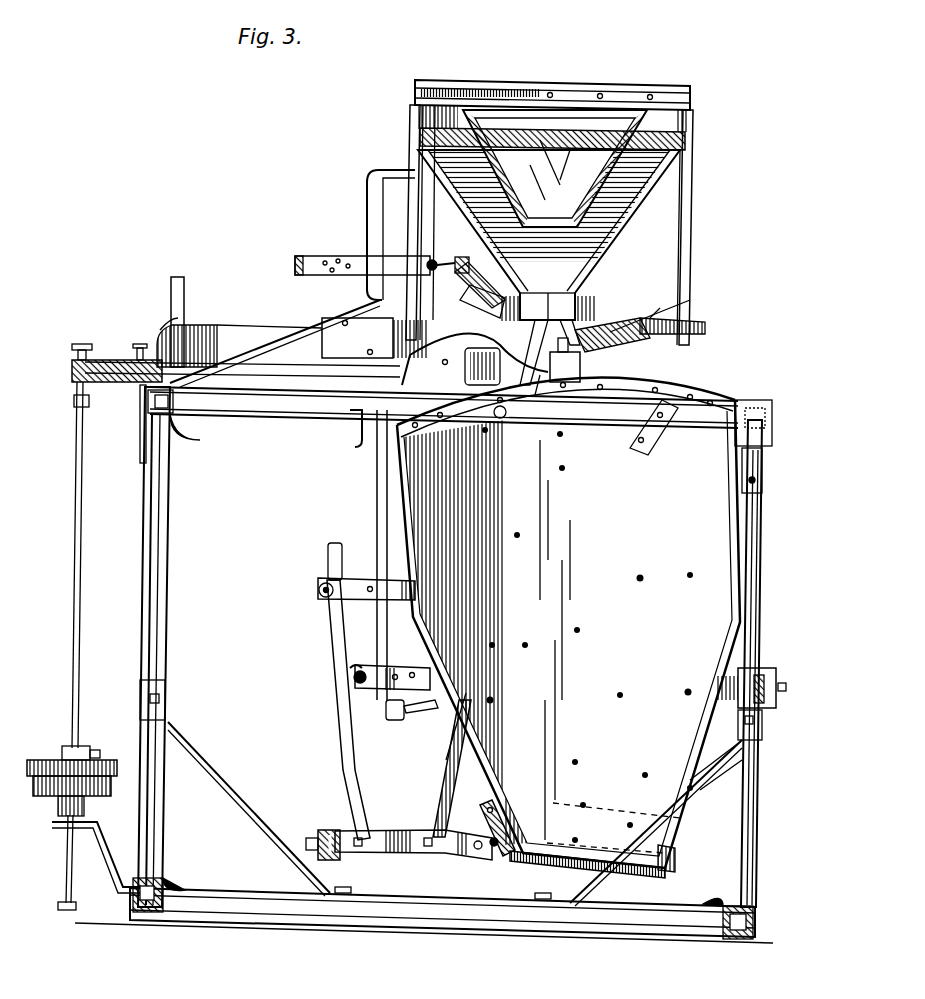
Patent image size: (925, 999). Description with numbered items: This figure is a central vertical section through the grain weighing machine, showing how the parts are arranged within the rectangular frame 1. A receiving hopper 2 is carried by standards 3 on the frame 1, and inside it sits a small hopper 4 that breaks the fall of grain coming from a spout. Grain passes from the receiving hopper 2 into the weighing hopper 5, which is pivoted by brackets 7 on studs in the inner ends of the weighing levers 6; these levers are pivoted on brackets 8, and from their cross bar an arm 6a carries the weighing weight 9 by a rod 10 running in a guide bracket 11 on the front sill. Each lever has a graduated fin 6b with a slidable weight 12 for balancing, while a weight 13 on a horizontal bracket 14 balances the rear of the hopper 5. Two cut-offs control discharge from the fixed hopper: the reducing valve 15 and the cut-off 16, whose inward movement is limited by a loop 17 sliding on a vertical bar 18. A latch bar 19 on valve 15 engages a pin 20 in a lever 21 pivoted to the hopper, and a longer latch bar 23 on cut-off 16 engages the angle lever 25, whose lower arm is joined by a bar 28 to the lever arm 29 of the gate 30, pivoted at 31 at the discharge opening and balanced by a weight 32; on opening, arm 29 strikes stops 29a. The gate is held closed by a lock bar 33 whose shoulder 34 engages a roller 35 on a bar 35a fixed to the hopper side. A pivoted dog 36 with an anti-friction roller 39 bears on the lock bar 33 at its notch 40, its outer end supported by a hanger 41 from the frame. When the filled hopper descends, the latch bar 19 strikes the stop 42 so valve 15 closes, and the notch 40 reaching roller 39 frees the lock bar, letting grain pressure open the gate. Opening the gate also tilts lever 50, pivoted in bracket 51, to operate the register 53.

The rectangular frame 1 is at (150, 525).
The receiving hopper 2 is at (548, 86).
The standards 3 is at (415, 145).
The small hopper 4 is at (555, 168).
The weighing hopper 5 is at (590, 485).
The weighing levers 6 is at (300, 370).
The arm 6a is at (120, 362).
The graduated fin 6b is at (318, 339).
The brackets 7 is at (172, 890).
The brackets 8 is at (497, 411).
The weighing weight 9 is at (100, 770).
The rod 10 is at (70, 725).
The guide bracket 11 is at (112, 868).
The slidable weight 12 is at (357, 338).
The weight 13 is at (764, 668).
The horizontal bracket 14 is at (762, 710).
The reducing valve 15 is at (632, 326).
The cut-off valve 16 is at (480, 290).
The loop 17 is at (352, 262).
The vertical bar 18 is at (368, 213).
The latch bar 19 is at (475, 359).
The pin 20 is at (550, 329).
The lever 21 is at (533, 399).
The latch bar 23 is at (705, 318).
The angle lever 25 is at (632, 375).
The bar 28 is at (438, 818).
The lever arm 29 is at (413, 858).
The stops 29a is at (415, 719).
The gate 30 is at (565, 862).
The pivot 31 is at (494, 850).
The weight 32 is at (320, 832).
The lock bar 33 is at (345, 708).
The shoulder 34 is at (322, 602).
The roller 35 is at (318, 590).
The bar 35a is at (328, 572).
The dog 36 is at (392, 666).
The anti-friction roller 39 is at (350, 668).
The notch 40 is at (352, 678).
The hanger 41 is at (382, 555).
The stop 42 is at (568, 345).
The lever 50 is at (188, 345).
The vertical bracket 51 is at (162, 328).
The register 53 is at (171, 310).